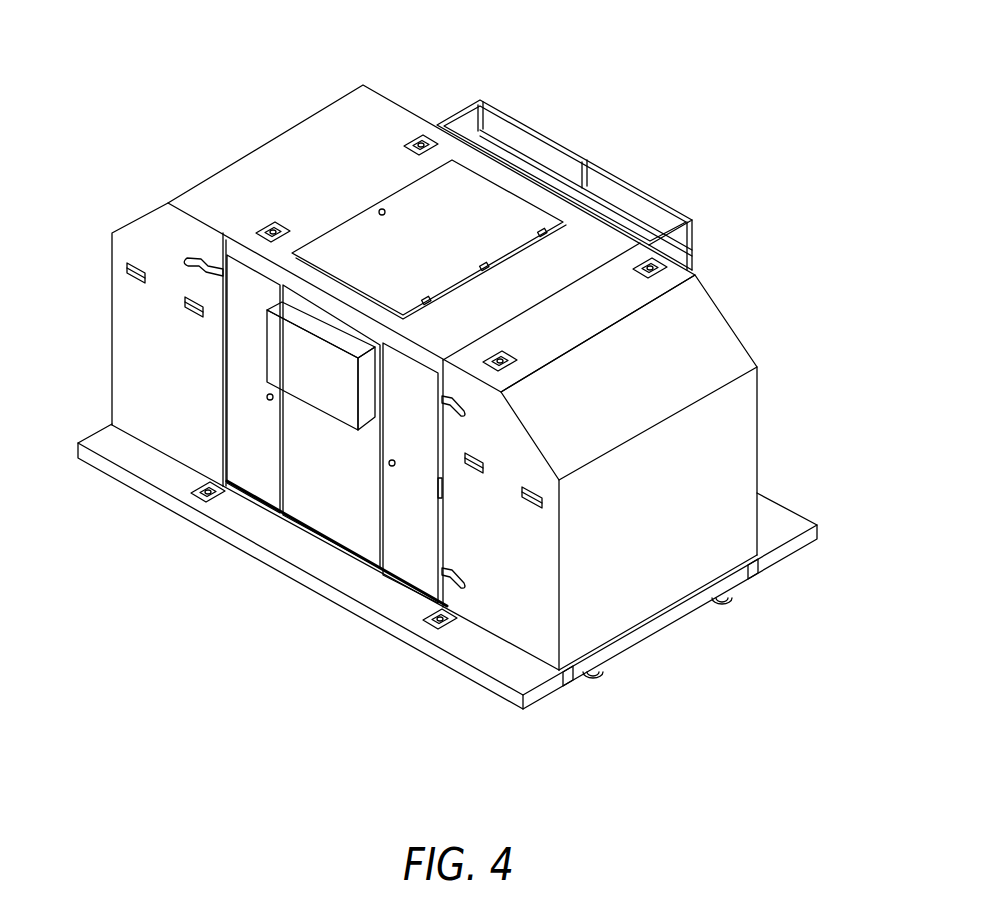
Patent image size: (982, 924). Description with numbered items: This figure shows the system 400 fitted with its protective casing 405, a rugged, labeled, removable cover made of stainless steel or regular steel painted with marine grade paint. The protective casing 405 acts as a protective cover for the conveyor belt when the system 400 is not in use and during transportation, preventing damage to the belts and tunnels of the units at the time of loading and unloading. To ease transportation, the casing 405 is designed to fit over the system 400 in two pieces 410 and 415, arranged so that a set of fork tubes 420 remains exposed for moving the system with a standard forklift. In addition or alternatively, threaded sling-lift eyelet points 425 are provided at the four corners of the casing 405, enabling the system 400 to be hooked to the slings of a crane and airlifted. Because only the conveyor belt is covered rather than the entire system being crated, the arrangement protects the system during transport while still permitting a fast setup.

The system 400 is at (502, 175).
The protective casing 405 is at (495, 728).
The first casing piece 410 is at (188, 455).
The second casing piece 415 is at (458, 513).
The fork tubes 420 is at (603, 674).
The sling-lift eyelet points 425 is at (422, 140).